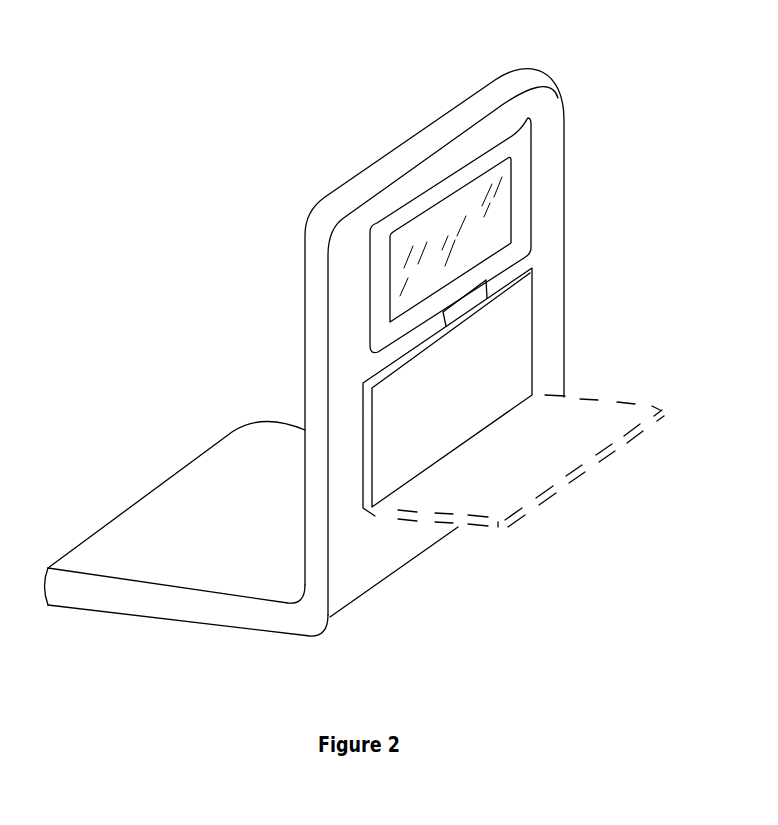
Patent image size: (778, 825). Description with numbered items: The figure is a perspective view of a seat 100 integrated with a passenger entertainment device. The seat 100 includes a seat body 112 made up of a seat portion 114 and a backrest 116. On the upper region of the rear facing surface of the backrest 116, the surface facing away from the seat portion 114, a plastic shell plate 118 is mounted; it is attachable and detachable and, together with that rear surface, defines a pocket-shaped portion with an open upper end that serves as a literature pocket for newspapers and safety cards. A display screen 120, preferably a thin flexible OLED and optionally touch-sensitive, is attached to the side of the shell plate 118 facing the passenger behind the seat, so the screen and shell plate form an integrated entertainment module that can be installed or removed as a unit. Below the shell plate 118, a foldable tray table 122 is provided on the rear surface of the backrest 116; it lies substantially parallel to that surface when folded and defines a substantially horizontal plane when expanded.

The seat 100 is at (359, 343).
The seat body 112 is at (303, 352).
The seat portion 114 is at (188, 534).
The backrest 116 is at (343, 568).
The shell plate 118 is at (517, 198).
The display screen 120 is at (500, 243).
The foldable tray table 122 is at (513, 378).